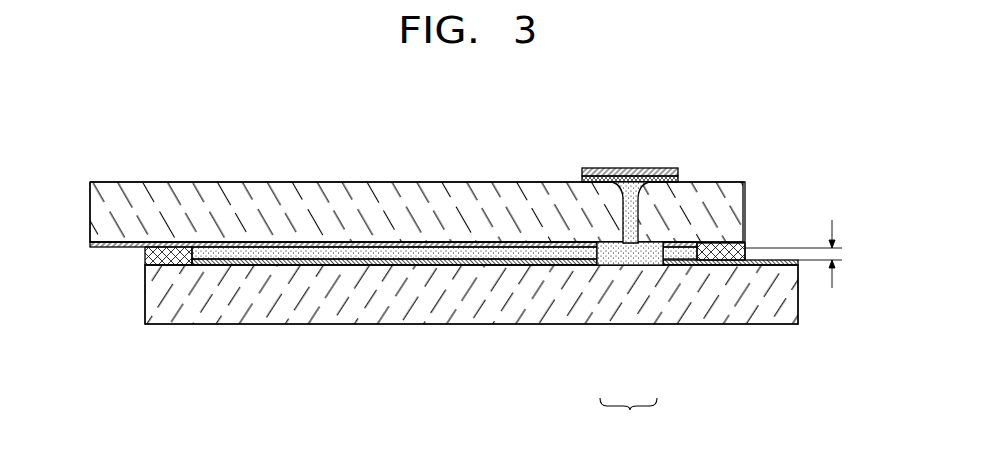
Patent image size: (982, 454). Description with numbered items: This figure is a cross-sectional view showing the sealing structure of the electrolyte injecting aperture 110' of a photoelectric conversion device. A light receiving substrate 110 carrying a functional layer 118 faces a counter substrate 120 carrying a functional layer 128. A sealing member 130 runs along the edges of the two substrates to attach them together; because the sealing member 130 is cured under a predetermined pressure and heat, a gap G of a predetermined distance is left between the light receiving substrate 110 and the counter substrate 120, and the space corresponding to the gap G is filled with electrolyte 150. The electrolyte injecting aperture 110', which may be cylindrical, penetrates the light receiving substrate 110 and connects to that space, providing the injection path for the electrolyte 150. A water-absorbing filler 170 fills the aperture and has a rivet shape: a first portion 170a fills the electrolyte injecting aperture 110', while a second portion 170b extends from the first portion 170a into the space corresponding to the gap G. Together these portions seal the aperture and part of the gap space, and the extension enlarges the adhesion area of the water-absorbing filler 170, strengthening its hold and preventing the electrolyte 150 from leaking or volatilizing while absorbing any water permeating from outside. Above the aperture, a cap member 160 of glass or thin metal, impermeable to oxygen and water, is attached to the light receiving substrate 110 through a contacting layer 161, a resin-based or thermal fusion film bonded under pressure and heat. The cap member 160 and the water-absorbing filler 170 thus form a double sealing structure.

The light receiving substrate 110 is at (417, 186).
The electrolyte injecting aperture 110' is at (714, 212).
The functional layer 118 is at (337, 242).
The counter substrate 120 is at (438, 305).
The functional layer 128 is at (340, 265).
The sealing member 130 is at (717, 258).
The electrolyte 150 is at (513, 252).
The cap member 160 is at (632, 176).
The contacting layer 161 is at (678, 178).
The water-absorbing filler 170 is at (628, 415).
The first portion 170a is at (628, 218).
The second portion 170b is at (648, 257).
The gap G is at (802, 254).